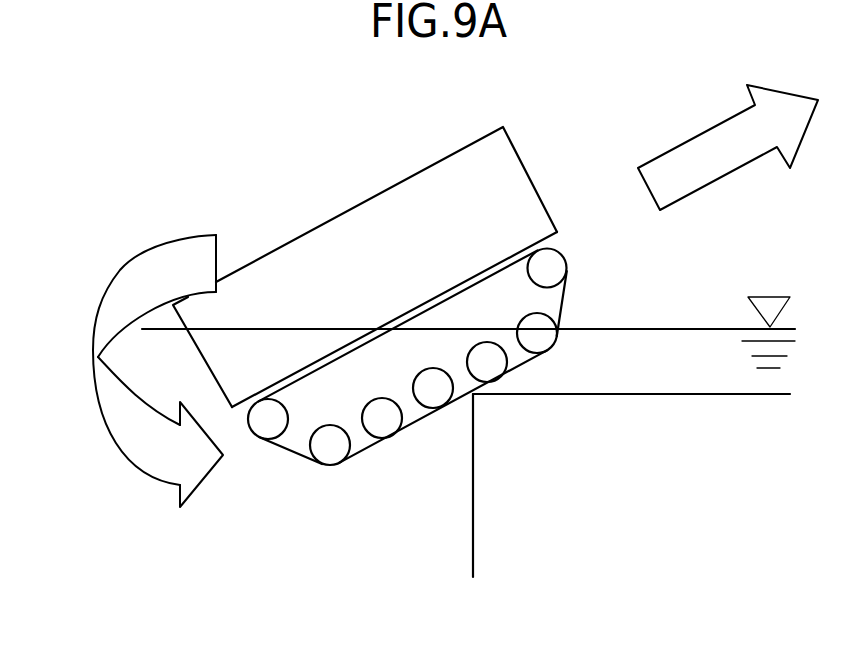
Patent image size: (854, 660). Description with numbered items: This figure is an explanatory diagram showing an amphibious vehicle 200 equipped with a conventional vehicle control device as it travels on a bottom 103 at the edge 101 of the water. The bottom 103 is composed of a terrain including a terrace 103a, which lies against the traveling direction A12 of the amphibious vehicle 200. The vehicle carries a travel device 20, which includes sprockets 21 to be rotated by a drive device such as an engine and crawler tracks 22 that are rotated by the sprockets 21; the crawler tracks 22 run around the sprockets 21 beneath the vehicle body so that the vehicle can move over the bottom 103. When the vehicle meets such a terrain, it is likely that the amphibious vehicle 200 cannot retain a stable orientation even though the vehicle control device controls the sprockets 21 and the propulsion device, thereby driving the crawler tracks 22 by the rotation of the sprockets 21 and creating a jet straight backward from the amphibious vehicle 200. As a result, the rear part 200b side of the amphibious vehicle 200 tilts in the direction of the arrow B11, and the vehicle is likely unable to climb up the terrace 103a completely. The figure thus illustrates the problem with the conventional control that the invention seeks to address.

The amphibious vehicle 200 is at (365, 323).
The rear part 200b is at (205, 360).
The travel device 20 is at (448, 407).
The sprocket 21 is at (563, 267).
The crawler track 22 is at (362, 453).
The edge of the water 101 is at (730, 248).
The bottom 103 is at (594, 511).
The terrace 103a is at (464, 414).
The traveling direction A12 is at (692, 137).
The arrow B11 is at (120, 437).